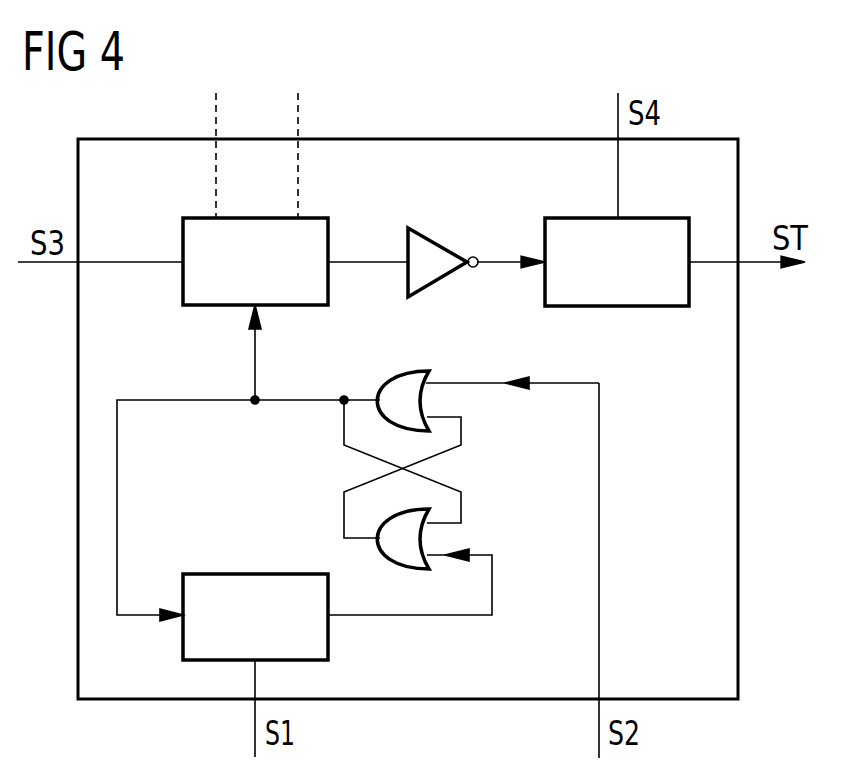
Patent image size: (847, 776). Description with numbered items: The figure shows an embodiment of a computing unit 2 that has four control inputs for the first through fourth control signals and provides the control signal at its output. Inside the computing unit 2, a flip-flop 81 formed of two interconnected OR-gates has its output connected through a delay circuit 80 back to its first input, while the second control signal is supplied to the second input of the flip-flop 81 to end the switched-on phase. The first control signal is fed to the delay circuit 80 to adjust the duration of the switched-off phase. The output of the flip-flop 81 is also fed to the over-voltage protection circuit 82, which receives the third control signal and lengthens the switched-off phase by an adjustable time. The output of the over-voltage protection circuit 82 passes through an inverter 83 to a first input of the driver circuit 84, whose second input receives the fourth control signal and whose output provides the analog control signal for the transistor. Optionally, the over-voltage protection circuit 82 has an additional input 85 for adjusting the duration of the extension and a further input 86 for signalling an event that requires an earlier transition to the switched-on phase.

The computing unit 2 is at (78, 425).
The delay circuit 80 is at (255, 573).
The flip-flop 81 is at (500, 490).
The over-voltage protection circuit 82 is at (202, 306).
The inverter 83 is at (437, 243).
The driver circuit 84 is at (617, 307).
The additional input 85 is at (216, 218).
The further input 86 is at (298, 218).